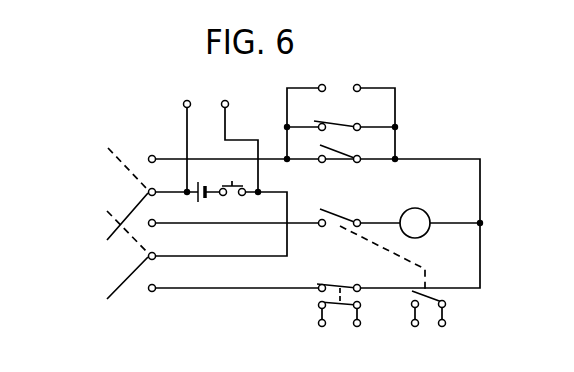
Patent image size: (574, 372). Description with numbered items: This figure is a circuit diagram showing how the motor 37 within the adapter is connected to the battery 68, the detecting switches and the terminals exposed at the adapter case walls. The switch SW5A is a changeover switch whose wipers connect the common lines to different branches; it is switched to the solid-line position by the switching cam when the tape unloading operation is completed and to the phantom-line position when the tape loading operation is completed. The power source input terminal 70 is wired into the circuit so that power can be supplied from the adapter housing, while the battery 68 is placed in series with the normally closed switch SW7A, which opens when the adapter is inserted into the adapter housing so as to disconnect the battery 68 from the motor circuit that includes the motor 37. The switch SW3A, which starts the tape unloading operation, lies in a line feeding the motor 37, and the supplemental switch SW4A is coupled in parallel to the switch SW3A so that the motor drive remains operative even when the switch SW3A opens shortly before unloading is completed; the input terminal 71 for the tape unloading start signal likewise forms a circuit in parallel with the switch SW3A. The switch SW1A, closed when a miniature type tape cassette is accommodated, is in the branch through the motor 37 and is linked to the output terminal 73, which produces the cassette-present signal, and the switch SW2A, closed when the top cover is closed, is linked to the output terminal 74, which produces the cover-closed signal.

The power source input terminal 70 is at (181, 98).
The input terminal for a tape unloading start signal 71 is at (318, 81).
The battery 68 is at (195, 197).
The motor 37 is at (429, 232).
The output terminal 74 is at (318, 329).
The output terminal 73 is at (410, 329).
The switch SW1A is at (352, 208).
The switch SW2A is at (344, 276).
The switch SW3A is at (346, 164).
The supplemental switch SW4A is at (343, 114).
The switch SW5A is at (100, 223).
The switch SW7A is at (243, 199).